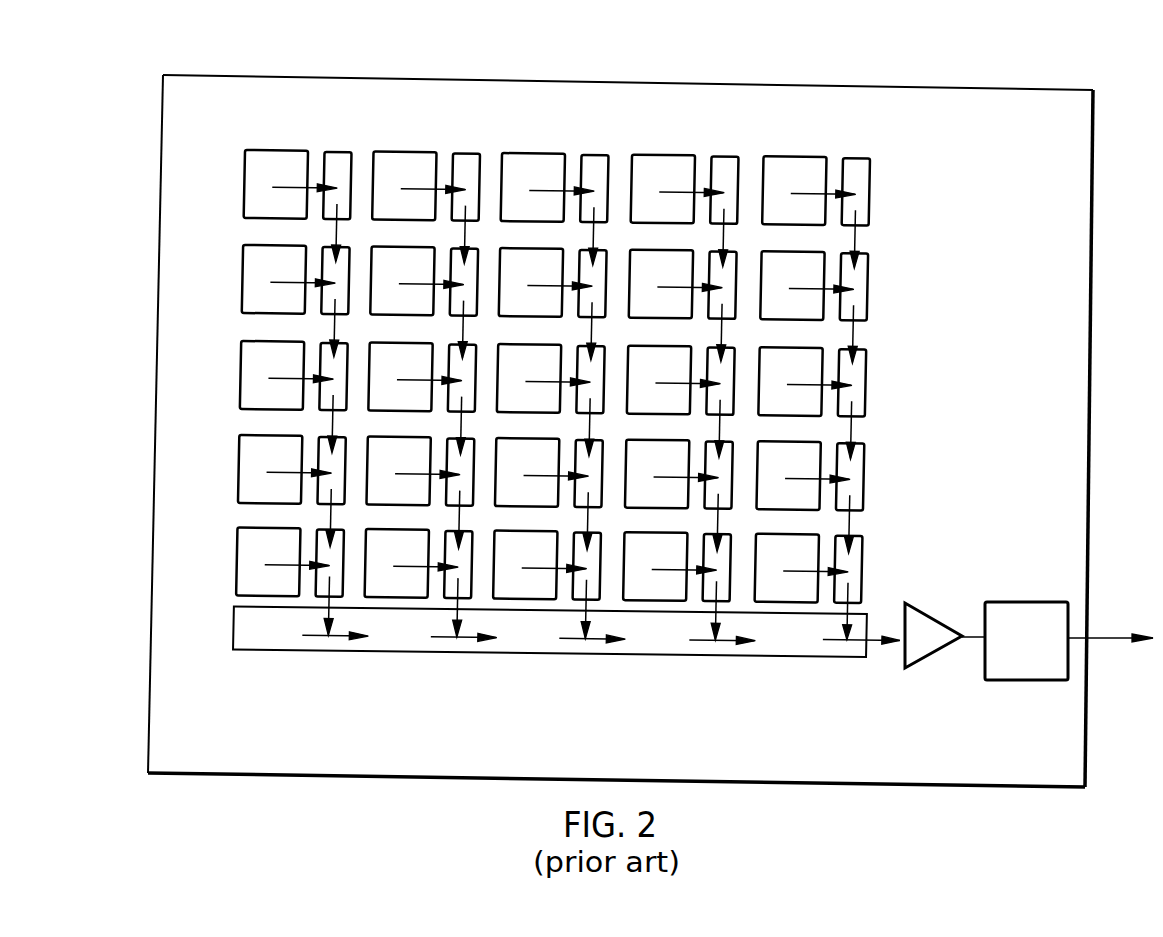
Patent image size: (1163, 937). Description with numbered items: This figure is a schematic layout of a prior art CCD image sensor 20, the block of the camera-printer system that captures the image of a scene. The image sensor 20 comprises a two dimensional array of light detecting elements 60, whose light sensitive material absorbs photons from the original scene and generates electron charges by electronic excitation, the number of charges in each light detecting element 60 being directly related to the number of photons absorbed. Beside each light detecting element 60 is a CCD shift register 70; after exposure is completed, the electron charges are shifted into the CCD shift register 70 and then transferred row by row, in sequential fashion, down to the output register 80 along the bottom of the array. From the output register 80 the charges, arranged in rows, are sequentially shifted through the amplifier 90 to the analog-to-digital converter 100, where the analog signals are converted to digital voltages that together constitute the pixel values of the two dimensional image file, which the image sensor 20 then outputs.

The image sensor 20 is at (980, 89).
The light detecting element 60 is at (289, 155).
The CCD shift register 70 is at (464, 152).
The output register 80 is at (278, 634).
The amplifier 90 is at (927, 623).
The analog-to-digital converter 100 is at (1032, 670).